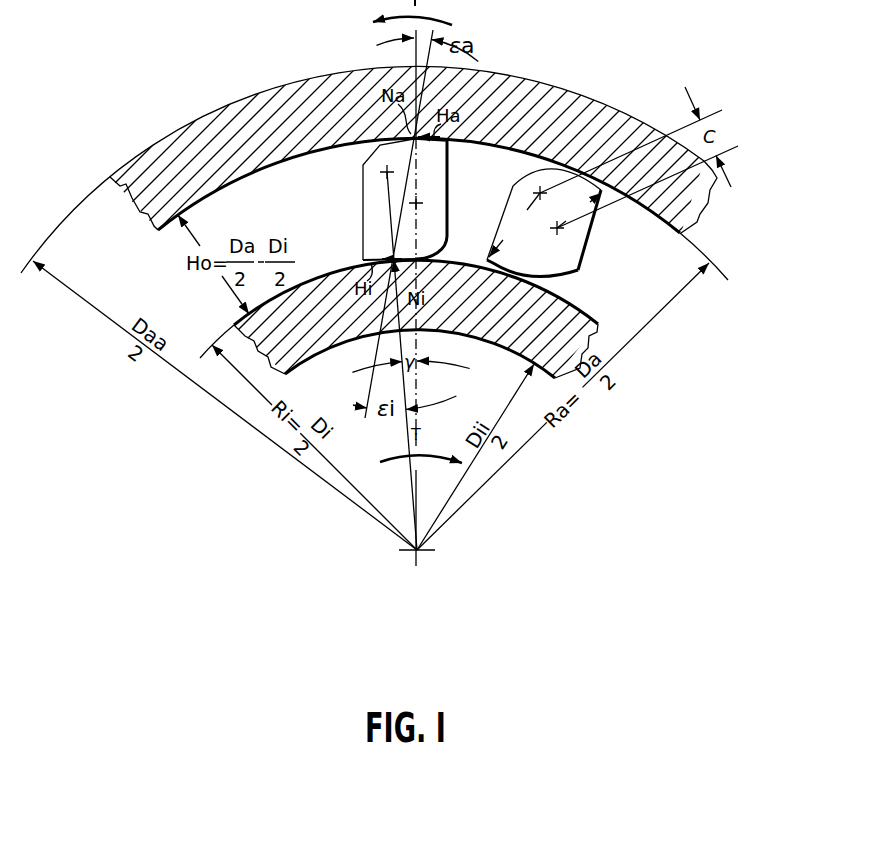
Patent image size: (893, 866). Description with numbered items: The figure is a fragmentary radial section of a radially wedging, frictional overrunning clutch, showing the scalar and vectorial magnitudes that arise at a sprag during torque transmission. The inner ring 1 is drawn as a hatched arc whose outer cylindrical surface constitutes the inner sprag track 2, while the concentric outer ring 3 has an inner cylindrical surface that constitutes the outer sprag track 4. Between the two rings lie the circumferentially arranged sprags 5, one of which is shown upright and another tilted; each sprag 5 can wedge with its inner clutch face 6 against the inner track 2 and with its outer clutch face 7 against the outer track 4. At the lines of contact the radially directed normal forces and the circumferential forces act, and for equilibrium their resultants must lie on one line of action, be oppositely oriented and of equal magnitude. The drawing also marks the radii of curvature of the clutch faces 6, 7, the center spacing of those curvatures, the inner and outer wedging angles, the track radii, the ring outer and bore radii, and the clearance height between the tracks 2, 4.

The inner ring 1 is at (522, 338).
The inner sprag track 2 is at (584, 306).
The outer ring 3 is at (690, 194).
The outer sprag track 4 is at (640, 205).
The sprag 5 is at (574, 237).
The inner clutch face 6 is at (556, 278).
The outer clutch face 7 is at (528, 178).